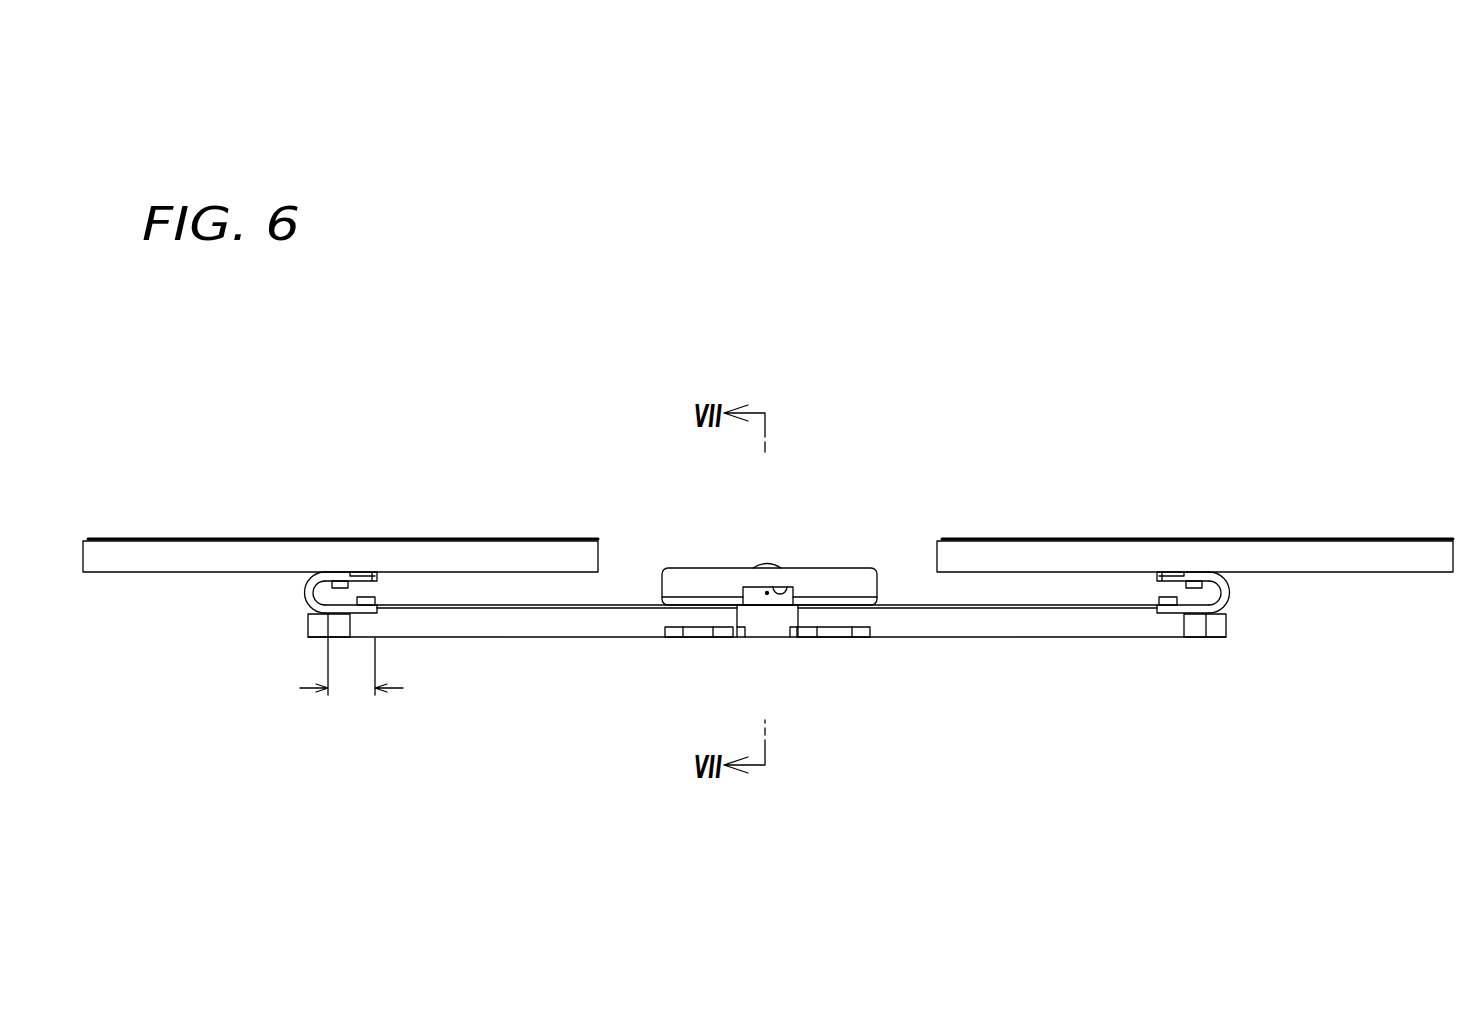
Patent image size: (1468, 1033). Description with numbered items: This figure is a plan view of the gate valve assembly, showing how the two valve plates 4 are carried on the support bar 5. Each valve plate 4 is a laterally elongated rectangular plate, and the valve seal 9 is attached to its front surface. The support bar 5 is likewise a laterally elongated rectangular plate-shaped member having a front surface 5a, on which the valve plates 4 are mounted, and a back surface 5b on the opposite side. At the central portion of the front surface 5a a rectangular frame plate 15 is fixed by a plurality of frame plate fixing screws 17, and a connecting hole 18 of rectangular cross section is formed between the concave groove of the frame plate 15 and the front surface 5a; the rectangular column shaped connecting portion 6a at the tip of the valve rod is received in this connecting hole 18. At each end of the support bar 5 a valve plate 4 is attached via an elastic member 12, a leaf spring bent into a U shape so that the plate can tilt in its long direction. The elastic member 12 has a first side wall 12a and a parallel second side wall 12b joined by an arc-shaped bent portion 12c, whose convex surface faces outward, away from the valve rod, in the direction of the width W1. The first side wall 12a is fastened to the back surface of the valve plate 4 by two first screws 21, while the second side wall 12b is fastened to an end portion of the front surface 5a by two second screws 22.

The valve plate 4 is at (480, 557).
The valve seal 9 is at (157, 540).
The support bar 5 is at (1035, 620).
The front surface 5a is at (915, 603).
The back surface 5b is at (940, 640).
The elastic member 12 is at (768, 575).
The first side wall 12a is at (338, 573).
The second side wall 12b is at (357, 612).
The bent portion 12c is at (305, 597).
The first screws 21 is at (342, 582).
The second screws 22 is at (366, 602).
The frame plate 15 is at (700, 587).
The connecting portion 6a is at (757, 598).
The connecting hole 18 is at (787, 587).
The frame plate fixing screws 17 is at (677, 632).
The width W1 is at (351, 684).